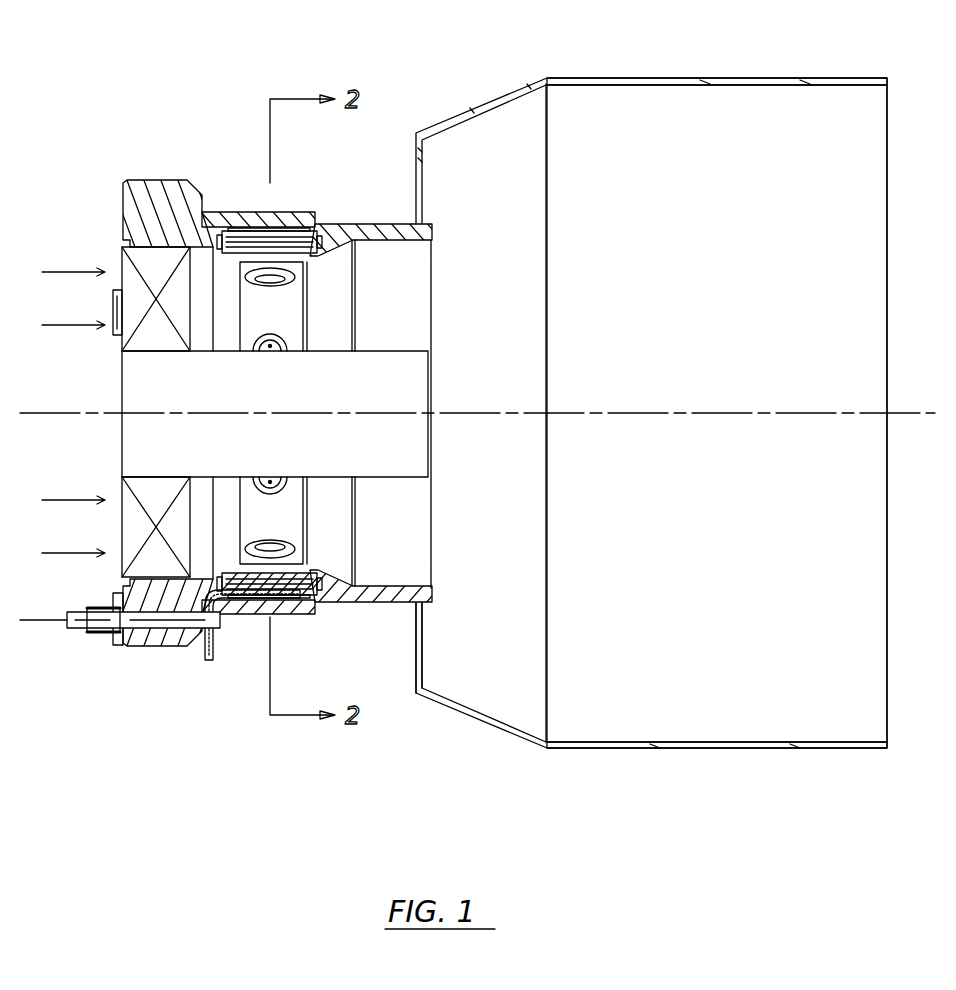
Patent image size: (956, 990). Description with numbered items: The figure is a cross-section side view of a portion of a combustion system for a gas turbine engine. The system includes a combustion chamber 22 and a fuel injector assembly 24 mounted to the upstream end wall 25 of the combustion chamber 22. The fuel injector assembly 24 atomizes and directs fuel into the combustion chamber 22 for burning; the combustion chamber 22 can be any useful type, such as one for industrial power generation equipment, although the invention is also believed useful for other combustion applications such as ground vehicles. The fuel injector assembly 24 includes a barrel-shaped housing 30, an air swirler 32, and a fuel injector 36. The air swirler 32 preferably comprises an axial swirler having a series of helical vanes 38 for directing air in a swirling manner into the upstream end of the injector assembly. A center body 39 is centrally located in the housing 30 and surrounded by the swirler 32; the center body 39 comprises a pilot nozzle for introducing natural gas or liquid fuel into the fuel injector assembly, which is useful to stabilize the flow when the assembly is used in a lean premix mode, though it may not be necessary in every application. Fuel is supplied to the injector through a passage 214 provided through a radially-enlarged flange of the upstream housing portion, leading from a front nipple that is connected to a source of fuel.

The combustion chamber 22 is at (700, 50).
The fuel injector assembly 24 is at (374, 116).
The upstream end wall 25 is at (416, 656).
The barrel-shaped housing 30 is at (167, 171).
The air swirler 32 is at (116, 348).
The fuel injector 36 is at (278, 224).
The helical vanes 38 is at (159, 343).
The center body 39 is at (282, 464).
The passage 214 is at (140, 624).